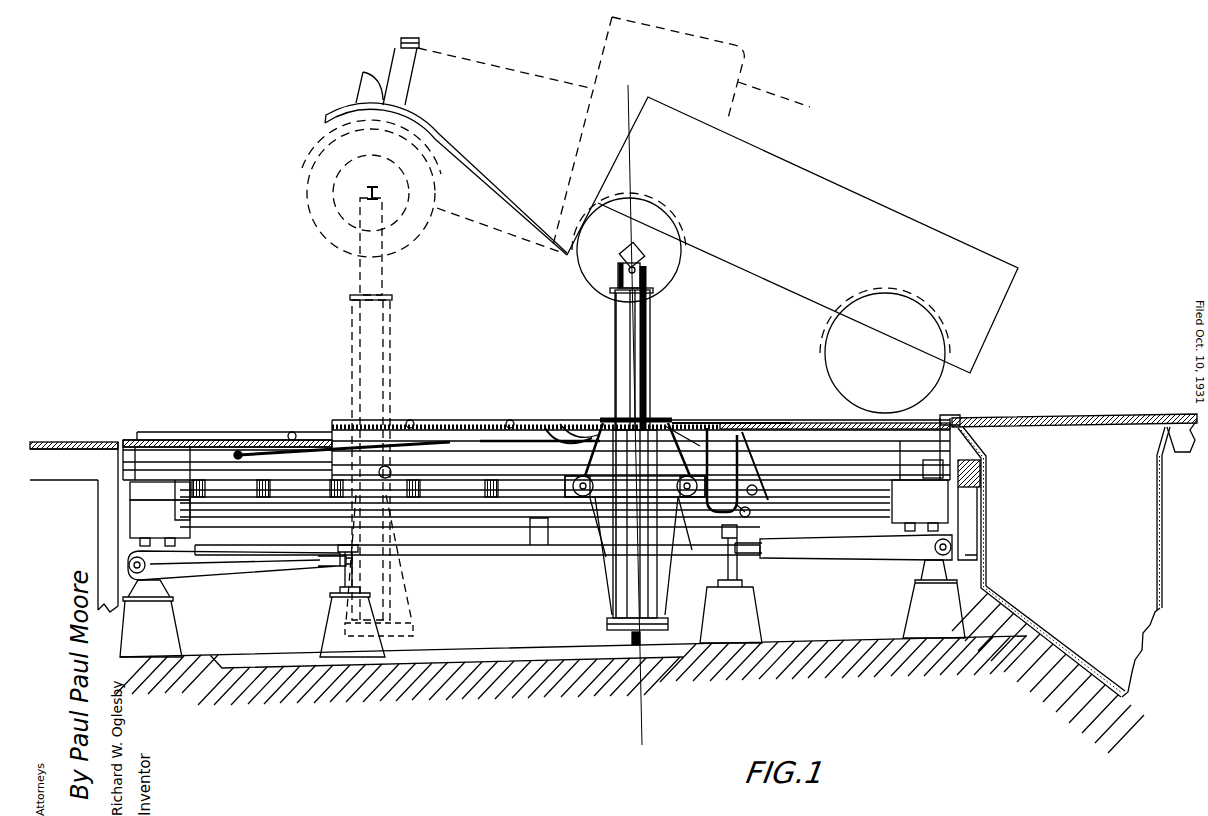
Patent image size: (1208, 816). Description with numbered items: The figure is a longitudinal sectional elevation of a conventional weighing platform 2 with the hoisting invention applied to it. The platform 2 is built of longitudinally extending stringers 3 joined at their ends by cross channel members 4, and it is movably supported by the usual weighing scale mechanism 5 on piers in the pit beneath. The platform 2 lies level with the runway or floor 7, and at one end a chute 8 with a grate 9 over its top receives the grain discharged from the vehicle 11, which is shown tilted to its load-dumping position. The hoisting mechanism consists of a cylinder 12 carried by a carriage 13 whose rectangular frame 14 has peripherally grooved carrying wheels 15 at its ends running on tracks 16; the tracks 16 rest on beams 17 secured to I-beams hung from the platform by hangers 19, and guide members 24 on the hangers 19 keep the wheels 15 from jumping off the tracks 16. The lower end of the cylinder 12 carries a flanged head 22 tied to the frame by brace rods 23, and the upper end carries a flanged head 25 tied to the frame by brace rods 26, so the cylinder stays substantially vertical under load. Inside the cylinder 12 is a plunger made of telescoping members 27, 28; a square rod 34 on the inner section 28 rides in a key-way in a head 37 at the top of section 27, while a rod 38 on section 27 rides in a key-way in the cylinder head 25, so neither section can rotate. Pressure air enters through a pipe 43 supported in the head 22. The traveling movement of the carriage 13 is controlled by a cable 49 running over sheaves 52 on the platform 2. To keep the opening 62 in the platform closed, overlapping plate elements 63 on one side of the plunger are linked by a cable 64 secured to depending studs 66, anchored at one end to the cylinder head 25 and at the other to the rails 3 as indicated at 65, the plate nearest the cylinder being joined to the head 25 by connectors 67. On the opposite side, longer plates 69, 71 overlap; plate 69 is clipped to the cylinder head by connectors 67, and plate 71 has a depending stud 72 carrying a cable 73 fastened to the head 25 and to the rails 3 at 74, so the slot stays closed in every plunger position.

The weighing platform 2 is at (955, 422).
The stringers 3 is at (158, 436).
The cross channel members 4 is at (140, 487).
The weighing scale mechanism 5 is at (262, 581).
The runway or floor 7 is at (66, 440).
The chute 8 is at (1135, 540).
The grate 9 is at (1093, 425).
The vehicle 11 is at (895, 228).
The cylinder 12 is at (632, 578).
The carriage 13 is at (676, 498).
The rectangular frame 14 is at (606, 487).
The carrying wheels 15 is at (705, 520).
The tracks 16 is at (512, 495).
The beams 17 is at (245, 522).
The hangers 19 is at (500, 527).
The flanged head 22 is at (607, 623).
The brace rods 23 is at (608, 598).
The guide members 24 is at (498, 432).
The flanged head 25 is at (650, 417).
The brace rods 26 is at (590, 437).
The telescoping member 27 is at (650, 322).
The telescoping member 28 is at (645, 268).
The rod 34 is at (617, 278).
The head 37 is at (654, 291).
The rod 38 is at (614, 338).
The pipe 43 is at (635, 655).
The cable 49 is at (295, 512).
The sheaves 52 is at (190, 525).
The opening 62 is at (260, 433).
The plate elements 63 is at (293, 431).
The cable 64 is at (380, 464).
The cable anchorage 65 is at (237, 450).
The depending stud 66 is at (365, 472).
The connectors 67 is at (598, 419).
The plate 69 is at (695, 424).
The plate 71 is at (945, 418).
The depending stud 72 is at (715, 423).
The cable 73 is at (750, 515).
The cable anchorage 74 is at (760, 470).